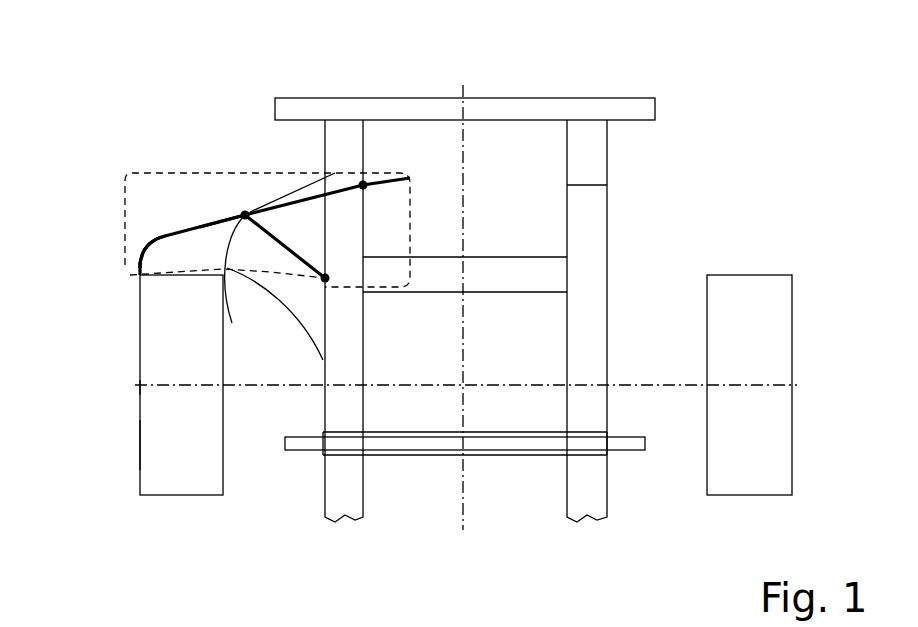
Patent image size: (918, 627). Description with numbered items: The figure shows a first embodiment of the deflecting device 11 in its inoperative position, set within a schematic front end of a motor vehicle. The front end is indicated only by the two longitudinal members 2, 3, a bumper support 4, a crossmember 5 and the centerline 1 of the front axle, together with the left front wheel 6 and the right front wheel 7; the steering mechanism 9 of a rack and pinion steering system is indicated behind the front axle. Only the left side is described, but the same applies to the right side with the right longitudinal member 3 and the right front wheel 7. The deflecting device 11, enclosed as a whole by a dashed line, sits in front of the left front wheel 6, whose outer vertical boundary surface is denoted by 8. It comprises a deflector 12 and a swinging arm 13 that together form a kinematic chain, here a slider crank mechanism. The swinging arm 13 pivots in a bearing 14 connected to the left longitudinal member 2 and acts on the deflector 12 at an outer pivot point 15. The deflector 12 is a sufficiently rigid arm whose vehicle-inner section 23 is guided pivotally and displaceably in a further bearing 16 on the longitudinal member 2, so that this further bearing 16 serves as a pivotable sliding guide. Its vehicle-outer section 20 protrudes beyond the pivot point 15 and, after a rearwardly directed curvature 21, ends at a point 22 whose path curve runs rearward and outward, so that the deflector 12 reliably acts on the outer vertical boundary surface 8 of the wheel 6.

The centerline of the front axle 1 is at (163, 387).
The left longitudinal member 2 is at (347, 343).
The right longitudinal member 3 is at (590, 340).
The bumper support 4 is at (487, 108).
The crossmember 5 is at (513, 273).
The left front wheel 6 is at (168, 335).
The right front wheel 7 is at (748, 318).
The outer vertical boundary surface 8 is at (138, 445).
The steering mechanism 9 is at (366, 452).
The deflecting device 11 is at (260, 172).
The deflector 12 is at (218, 224).
The swinging arm 13 is at (300, 247).
The bearing 14 is at (325, 278).
The outer pivot point 15 is at (245, 215).
The further bearing 16 is at (367, 182).
The vehicle-outer section 20 is at (192, 225).
The rearwardly directed curvature 21 is at (152, 235).
The point 22 is at (140, 267).
The vehicle-inner section 23 is at (290, 198).